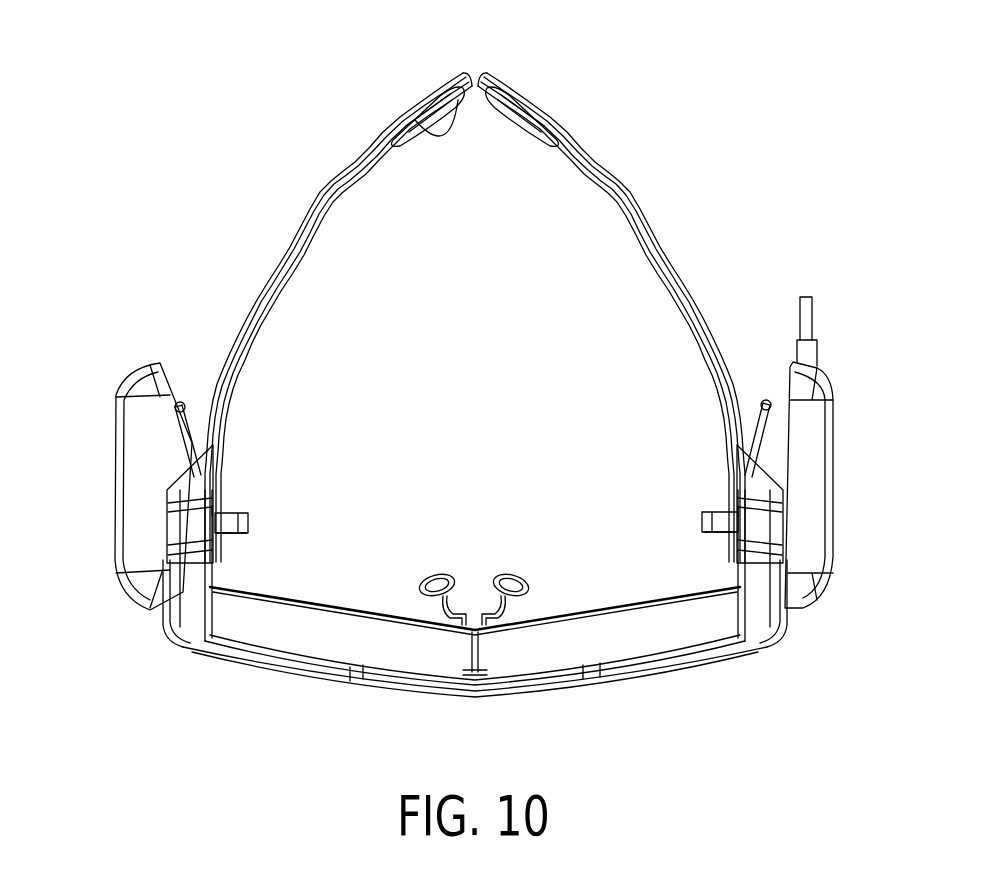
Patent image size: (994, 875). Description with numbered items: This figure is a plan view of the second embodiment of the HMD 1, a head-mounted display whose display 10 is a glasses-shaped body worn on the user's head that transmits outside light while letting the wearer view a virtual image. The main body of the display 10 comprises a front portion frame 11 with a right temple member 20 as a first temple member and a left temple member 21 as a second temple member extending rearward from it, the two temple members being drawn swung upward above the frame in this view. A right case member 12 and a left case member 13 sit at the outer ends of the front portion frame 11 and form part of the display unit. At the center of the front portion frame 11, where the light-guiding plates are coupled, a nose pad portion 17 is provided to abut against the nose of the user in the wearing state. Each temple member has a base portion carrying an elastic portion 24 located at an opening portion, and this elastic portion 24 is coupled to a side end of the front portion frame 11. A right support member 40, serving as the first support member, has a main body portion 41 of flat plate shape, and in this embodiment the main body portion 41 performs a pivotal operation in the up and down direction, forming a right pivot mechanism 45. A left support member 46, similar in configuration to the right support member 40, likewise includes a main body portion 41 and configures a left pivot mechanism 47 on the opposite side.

The HMD 1 is at (598, 90).
The display 10 is at (582, 610).
The front portion frame 11 is at (337, 690).
The right case member 12 is at (125, 500).
The left case member 13 is at (824, 500).
The nose pad portion 17 is at (500, 571).
The right temple member 20 is at (322, 188).
The left temple member 21 is at (626, 186).
The elastic portion 24 is at (182, 402).
The right support member 40 is at (262, 521).
The main body portion 41 is at (231, 531).
The right pivot mechanism 45 is at (217, 510).
The left support member 46 is at (688, 521).
The left pivot mechanism 47 is at (731, 510).